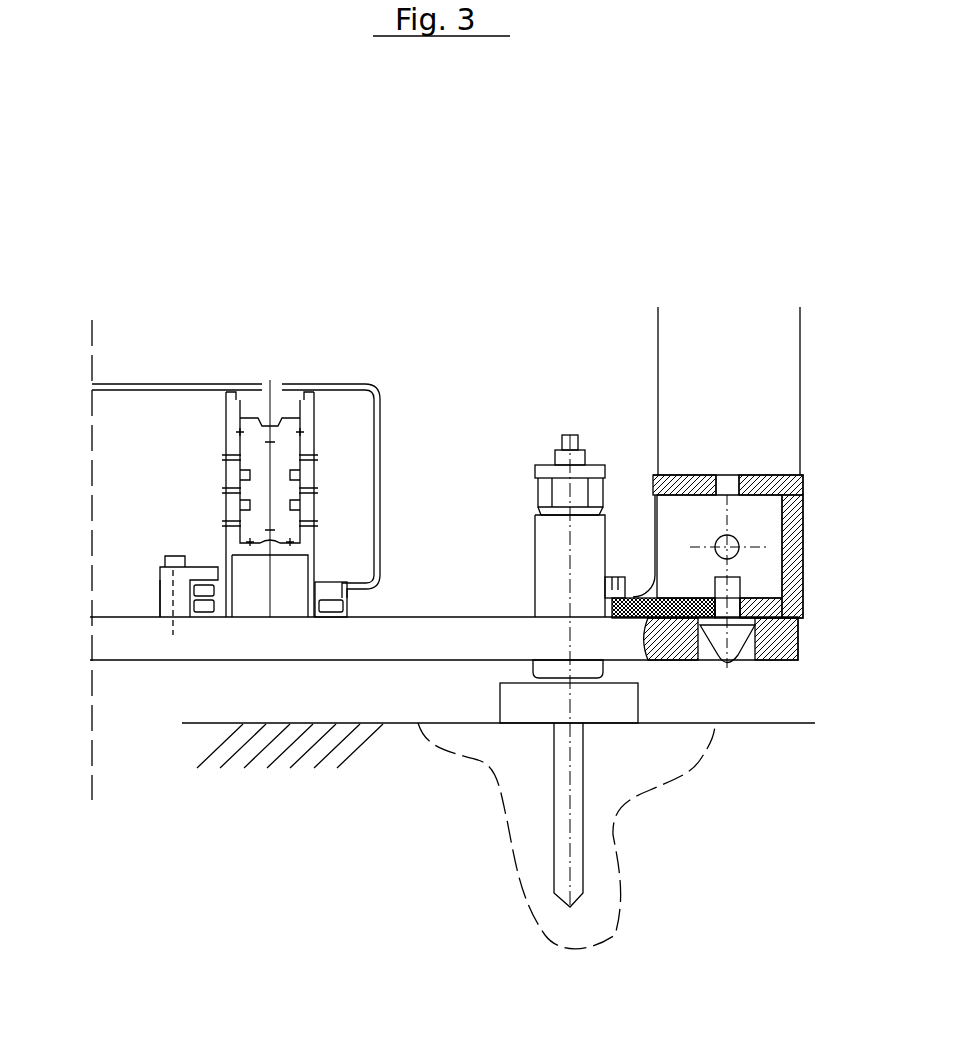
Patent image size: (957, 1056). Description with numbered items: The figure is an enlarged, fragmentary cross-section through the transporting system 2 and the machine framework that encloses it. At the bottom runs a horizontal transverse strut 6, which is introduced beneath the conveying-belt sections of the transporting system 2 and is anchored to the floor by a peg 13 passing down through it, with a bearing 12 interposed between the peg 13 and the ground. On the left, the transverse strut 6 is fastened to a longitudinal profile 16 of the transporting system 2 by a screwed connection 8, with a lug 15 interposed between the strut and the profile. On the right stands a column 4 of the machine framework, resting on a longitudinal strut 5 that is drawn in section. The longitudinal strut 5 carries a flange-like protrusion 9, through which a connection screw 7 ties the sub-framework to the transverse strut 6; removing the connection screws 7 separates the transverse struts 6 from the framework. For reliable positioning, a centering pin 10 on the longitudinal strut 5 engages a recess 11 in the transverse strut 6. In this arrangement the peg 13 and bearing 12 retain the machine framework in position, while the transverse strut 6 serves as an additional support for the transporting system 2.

The transporting system 2 is at (115, 412).
The column 4 is at (767, 367).
The longitudinal strut 5 is at (788, 520).
The transverse strut 6 is at (347, 641).
The connection screw 7 is at (614, 577).
The screwed connection 8 is at (163, 557).
The flange-like protrusion 9 is at (633, 593).
The centering pin 10 is at (742, 657).
The recess 11 is at (708, 650).
The bearing 12 is at (518, 705).
The peg 13 is at (540, 535).
The lug 15 is at (170, 610).
The longitudinal profile 16 is at (255, 480).